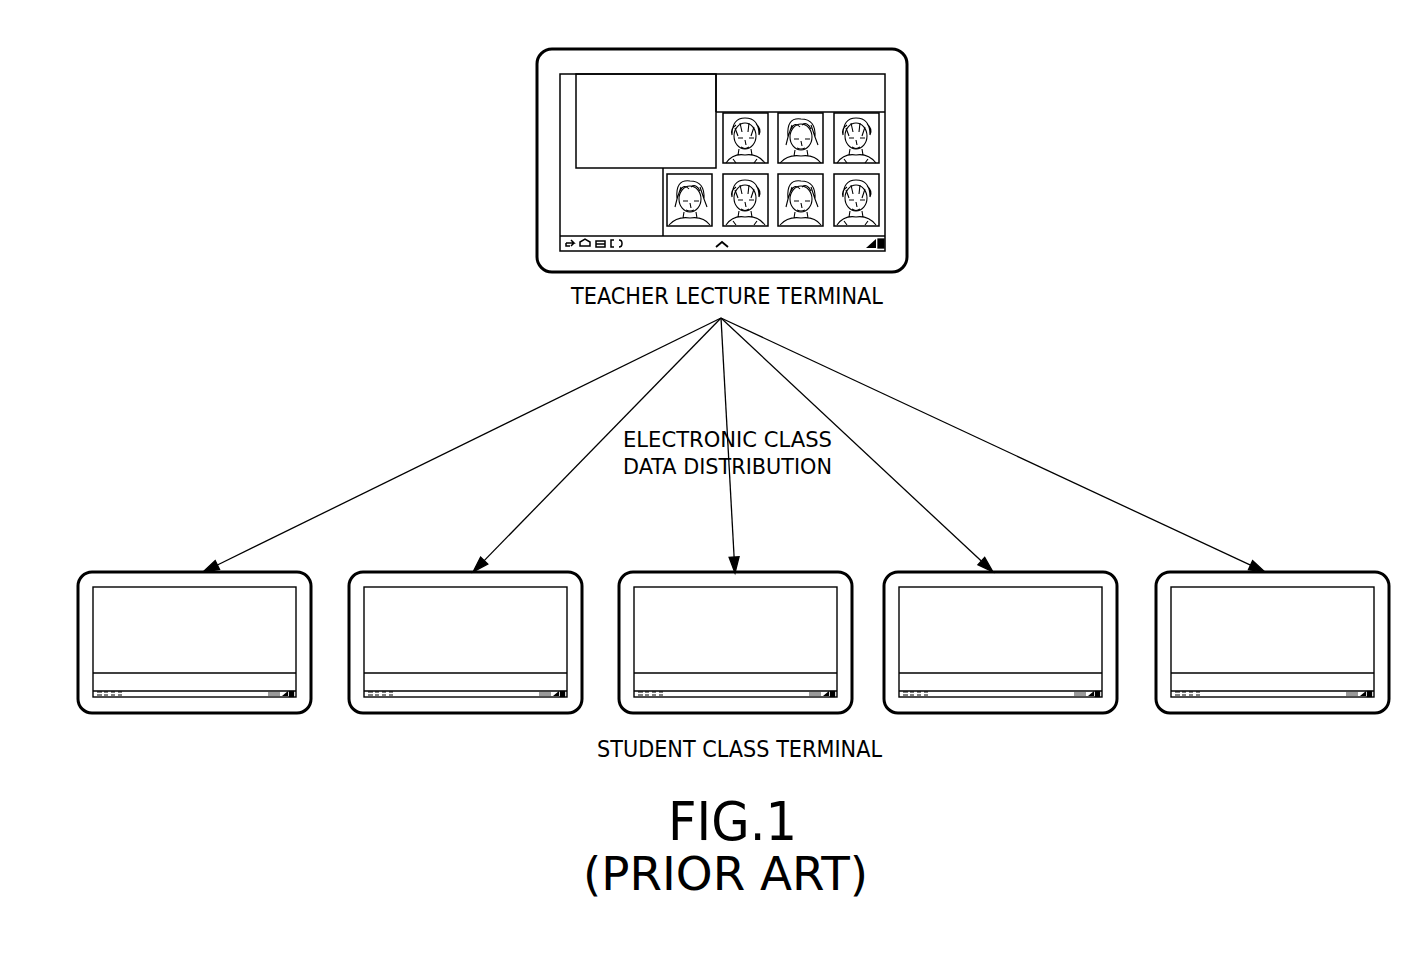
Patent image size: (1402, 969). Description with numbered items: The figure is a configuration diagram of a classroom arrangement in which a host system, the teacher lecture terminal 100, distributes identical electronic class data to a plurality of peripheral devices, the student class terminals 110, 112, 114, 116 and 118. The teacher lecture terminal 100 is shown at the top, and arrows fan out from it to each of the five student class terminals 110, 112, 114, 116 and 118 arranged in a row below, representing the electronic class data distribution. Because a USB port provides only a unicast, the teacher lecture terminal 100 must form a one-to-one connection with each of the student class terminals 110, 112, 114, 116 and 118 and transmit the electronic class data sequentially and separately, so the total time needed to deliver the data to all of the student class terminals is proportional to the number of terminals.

The teacher lecture terminal 100 is at (908, 160).
The student class terminal 110 is at (195, 714).
The student class terminal 112 is at (466, 714).
The student class terminal 114 is at (797, 572).
The student class terminal 116 is at (1001, 714).
The student class terminal 118 is at (1272, 714).